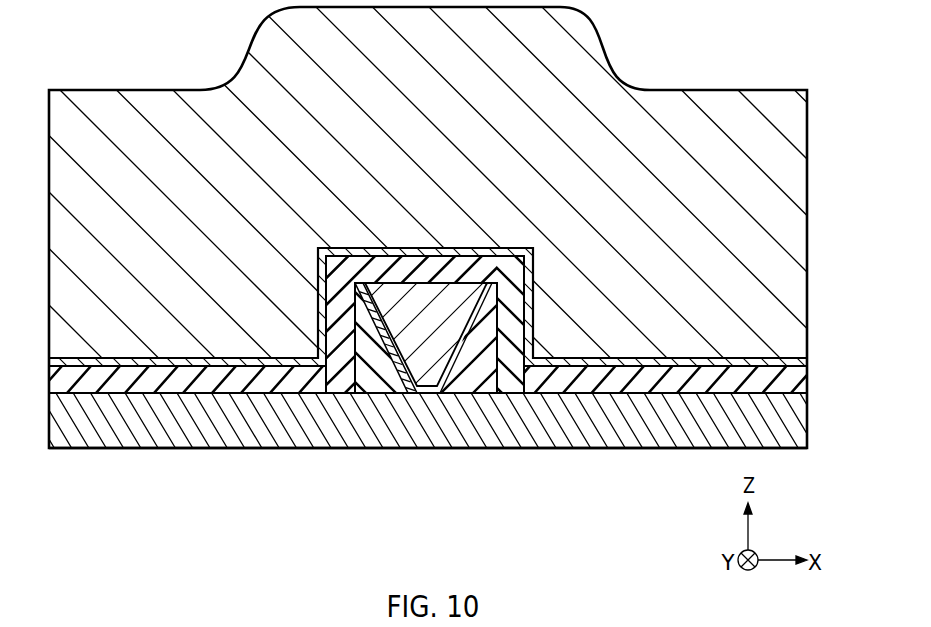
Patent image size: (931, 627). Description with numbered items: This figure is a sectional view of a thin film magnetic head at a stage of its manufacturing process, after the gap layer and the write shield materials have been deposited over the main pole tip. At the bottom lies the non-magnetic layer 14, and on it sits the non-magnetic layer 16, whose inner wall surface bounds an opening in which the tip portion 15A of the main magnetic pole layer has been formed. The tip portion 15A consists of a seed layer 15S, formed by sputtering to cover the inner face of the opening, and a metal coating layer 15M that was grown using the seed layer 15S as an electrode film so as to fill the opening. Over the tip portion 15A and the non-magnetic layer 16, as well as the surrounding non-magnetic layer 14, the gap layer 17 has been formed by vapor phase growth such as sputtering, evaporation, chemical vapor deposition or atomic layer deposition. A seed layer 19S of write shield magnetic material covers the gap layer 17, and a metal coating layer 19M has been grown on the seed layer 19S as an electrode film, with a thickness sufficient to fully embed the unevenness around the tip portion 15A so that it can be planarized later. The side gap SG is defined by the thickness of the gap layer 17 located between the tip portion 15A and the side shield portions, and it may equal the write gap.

The non-magnetic layer 14 is at (145, 433).
The tip portion 15A is at (435, 424).
The seed layer 15S is at (418, 388).
The metal coating layer 15M is at (430, 387).
The non-magnetic layer 16 is at (384, 383).
The gap layer 17 is at (683, 383).
The metal coating layer 19M is at (664, 108).
The seed layer 19S is at (740, 363).
The side gap SG is at (524, 247).